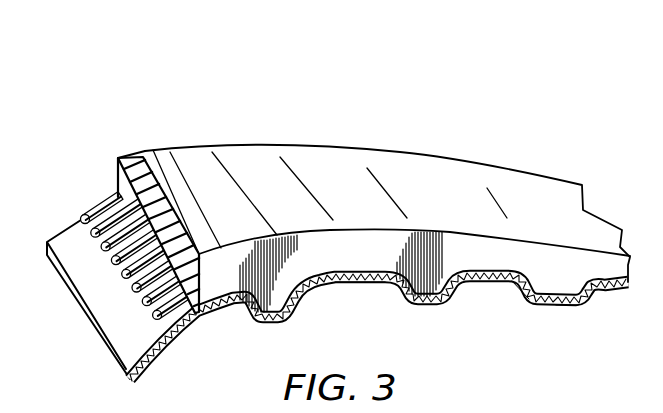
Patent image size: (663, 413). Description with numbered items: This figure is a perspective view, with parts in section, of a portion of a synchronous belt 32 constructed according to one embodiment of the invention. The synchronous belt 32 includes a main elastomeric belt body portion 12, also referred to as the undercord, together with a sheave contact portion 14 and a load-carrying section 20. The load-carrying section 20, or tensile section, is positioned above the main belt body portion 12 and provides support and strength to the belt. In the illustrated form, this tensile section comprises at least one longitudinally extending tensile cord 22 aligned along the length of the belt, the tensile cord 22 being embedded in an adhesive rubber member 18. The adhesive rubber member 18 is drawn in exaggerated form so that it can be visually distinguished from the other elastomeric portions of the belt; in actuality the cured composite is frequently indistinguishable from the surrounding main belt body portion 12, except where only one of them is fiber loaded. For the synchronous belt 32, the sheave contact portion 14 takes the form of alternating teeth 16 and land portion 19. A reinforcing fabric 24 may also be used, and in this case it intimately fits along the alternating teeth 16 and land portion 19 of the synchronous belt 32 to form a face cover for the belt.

The main belt body portion 12 is at (287, 287).
The sheave contact portion 14 is at (518, 286).
The teeth 16 is at (581, 305).
The adhesive rubber member 18 is at (128, 188).
The land portion 19 is at (347, 283).
The load-carrying section 20 is at (118, 190).
The tensile cord 22 is at (111, 262).
The reinforcing fabric 24 is at (430, 305).
The synchronous belt 32 is at (264, 126).